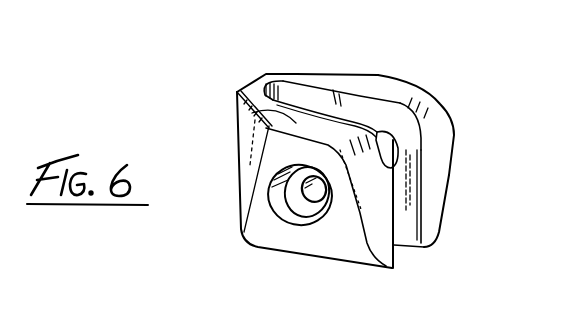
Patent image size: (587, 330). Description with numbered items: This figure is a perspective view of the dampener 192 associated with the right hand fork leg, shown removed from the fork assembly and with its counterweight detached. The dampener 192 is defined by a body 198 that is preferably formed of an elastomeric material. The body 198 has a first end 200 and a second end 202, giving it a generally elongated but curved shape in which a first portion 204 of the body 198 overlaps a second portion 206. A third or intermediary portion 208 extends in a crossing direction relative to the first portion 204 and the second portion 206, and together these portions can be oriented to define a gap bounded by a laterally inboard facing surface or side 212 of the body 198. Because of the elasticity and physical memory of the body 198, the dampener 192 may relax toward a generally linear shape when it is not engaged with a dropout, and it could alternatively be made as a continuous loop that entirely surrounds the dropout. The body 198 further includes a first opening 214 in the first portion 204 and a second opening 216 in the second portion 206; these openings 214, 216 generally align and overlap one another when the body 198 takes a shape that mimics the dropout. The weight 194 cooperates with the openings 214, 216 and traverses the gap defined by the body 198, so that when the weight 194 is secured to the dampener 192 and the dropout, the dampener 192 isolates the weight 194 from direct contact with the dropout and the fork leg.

The dampener 192 is at (258, 233).
The weight 194 is at (312, 210).
The body 198 is at (393, 92).
The first end 200 is at (441, 173).
The second end 202 is at (383, 223).
The first portion 204 is at (320, 74).
The second portion 206 is at (265, 118).
The intermediary portion 208 is at (252, 82).
The laterally inboard facing side 212 is at (416, 220).
The first opening 214 is at (393, 140).
The second opening 216 is at (281, 193).